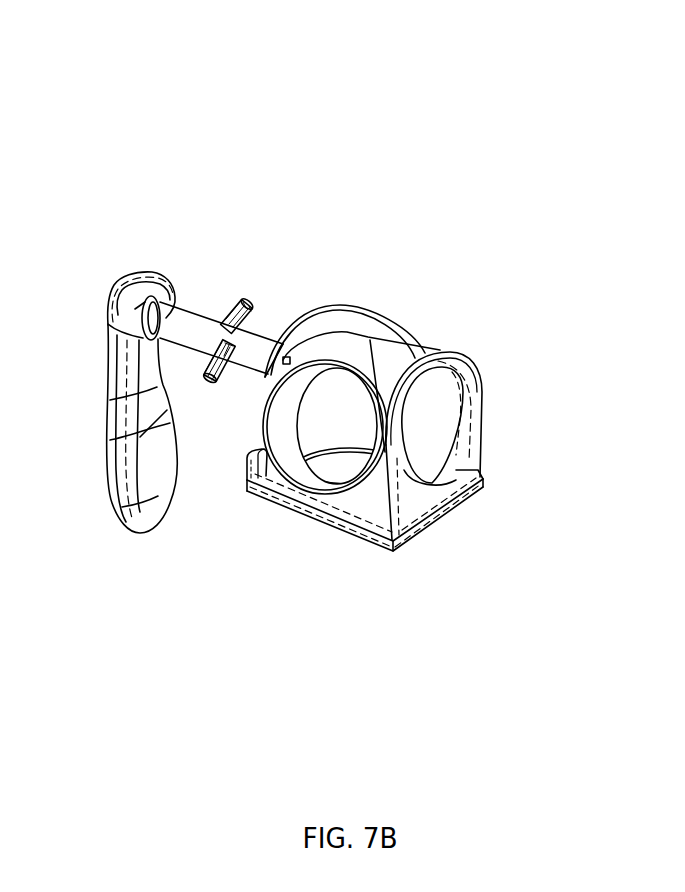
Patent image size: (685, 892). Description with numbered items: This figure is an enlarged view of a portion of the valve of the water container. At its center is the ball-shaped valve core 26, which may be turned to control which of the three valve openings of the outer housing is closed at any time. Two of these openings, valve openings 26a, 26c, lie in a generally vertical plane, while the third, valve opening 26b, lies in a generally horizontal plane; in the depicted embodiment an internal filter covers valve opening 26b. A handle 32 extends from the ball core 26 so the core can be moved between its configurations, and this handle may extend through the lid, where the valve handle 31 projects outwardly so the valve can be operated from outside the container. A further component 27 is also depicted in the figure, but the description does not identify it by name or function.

The valve core 26 is at (365, 289).
The valve opening 26a is at (447, 486).
The valve opening 26b is at (348, 465).
The valve opening 26c is at (277, 475).
The right ring 27 is at (472, 336).
The valve handle 31 is at (134, 248).
The handle 32 is at (223, 310).